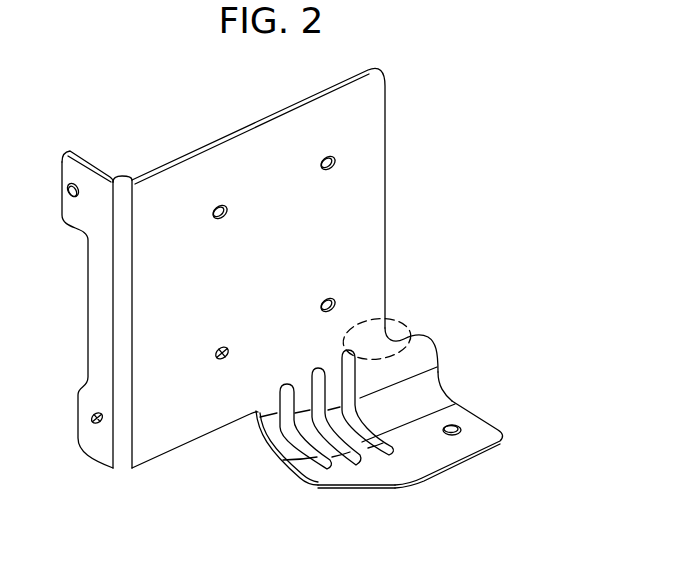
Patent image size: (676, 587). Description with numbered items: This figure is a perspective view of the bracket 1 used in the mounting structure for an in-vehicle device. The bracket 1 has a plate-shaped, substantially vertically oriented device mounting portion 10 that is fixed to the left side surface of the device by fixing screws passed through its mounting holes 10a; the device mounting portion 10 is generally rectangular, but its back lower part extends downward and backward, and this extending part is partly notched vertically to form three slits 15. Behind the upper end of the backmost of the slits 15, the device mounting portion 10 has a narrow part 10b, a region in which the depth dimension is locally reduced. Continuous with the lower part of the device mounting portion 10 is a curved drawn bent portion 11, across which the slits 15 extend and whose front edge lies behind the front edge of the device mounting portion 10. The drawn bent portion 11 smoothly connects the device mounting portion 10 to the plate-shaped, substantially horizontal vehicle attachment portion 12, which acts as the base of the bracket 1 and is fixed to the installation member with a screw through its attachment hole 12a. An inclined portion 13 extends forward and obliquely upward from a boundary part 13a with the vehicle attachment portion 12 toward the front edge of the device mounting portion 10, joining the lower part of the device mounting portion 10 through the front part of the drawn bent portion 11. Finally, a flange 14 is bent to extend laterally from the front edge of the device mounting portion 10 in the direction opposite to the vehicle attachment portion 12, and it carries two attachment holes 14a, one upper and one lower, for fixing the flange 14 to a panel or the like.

The bracket 1 is at (212, 141).
The device mounting portion 10 is at (317, 232).
The mounting holes 10a is at (227, 363).
The narrow part 10b is at (398, 323).
The drawn bent portion 11 is at (427, 392).
The vehicle attachment portion 12 is at (443, 450).
The attachment hole 12a is at (456, 427).
The inclined portion 13 is at (328, 475).
The boundary part 13a is at (382, 475).
The flange 14 is at (85, 177).
The attachment holes 14a is at (95, 424).
The slits 15 is at (297, 383).